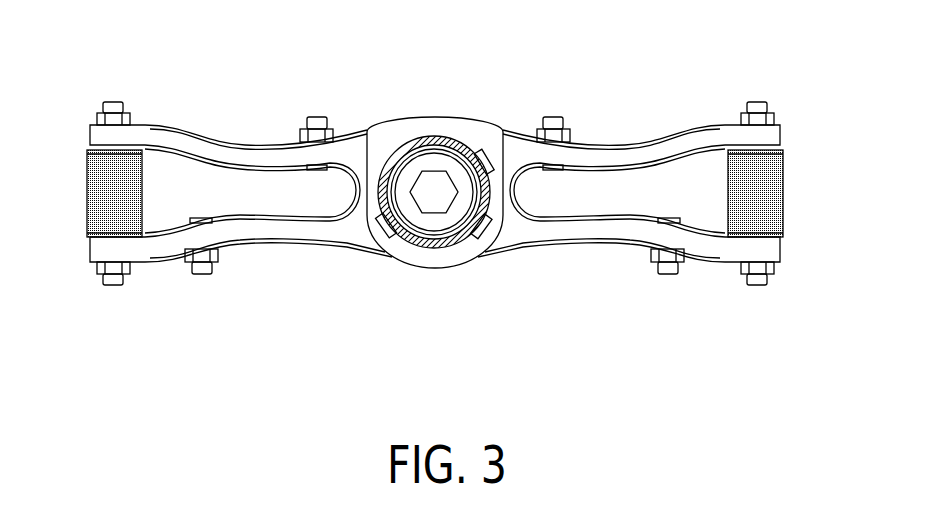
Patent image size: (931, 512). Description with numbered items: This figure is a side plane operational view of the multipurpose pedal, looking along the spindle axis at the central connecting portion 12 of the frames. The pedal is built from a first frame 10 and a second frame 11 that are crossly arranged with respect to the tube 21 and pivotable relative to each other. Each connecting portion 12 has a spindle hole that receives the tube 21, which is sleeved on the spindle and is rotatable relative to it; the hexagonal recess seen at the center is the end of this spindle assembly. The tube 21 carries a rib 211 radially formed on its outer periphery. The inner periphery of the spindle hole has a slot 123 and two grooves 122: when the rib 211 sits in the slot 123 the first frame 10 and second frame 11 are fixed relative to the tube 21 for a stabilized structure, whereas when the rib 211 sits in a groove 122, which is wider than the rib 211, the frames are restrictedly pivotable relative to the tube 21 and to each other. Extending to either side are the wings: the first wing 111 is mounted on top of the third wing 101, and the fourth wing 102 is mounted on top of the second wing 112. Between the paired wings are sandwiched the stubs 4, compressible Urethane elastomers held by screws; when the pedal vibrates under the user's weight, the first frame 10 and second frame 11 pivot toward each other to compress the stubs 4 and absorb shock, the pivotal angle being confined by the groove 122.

The stub 4 is at (750, 195).
The first frame 10 is at (595, 245).
The second frame 11 is at (593, 140).
The connecting portion 12 is at (402, 135).
The tube 21 is at (428, 140).
The third wing 101 is at (252, 232).
The fourth wing 102 is at (630, 150).
The first wing 111 is at (214, 148).
The second wing 112 is at (632, 232).
The groove 122 is at (385, 227).
The slot 123 is at (486, 152).
The rib 211 is at (482, 230).